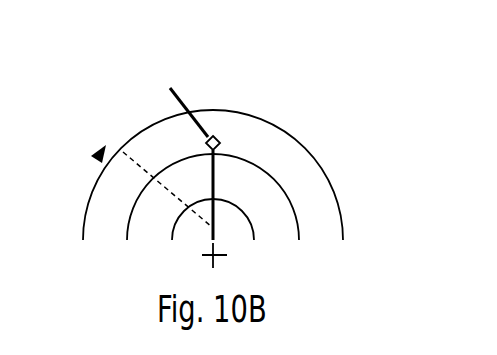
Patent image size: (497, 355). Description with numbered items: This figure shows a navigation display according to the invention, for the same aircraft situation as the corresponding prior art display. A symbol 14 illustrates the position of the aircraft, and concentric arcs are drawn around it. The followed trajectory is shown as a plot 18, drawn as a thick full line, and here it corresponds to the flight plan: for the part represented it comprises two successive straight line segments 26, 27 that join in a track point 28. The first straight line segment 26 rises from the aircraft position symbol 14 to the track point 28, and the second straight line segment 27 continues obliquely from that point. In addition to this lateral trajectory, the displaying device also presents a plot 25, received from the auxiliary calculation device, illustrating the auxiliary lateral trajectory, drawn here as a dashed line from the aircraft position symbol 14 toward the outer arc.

The plot 18 is at (220, 89).
The straight line segment 27 is at (177, 100).
The track point 28 is at (221, 141).
The plot 25 is at (160, 188).
The straight line segment 26 is at (212, 233).
The symbol 14 is at (225, 258).